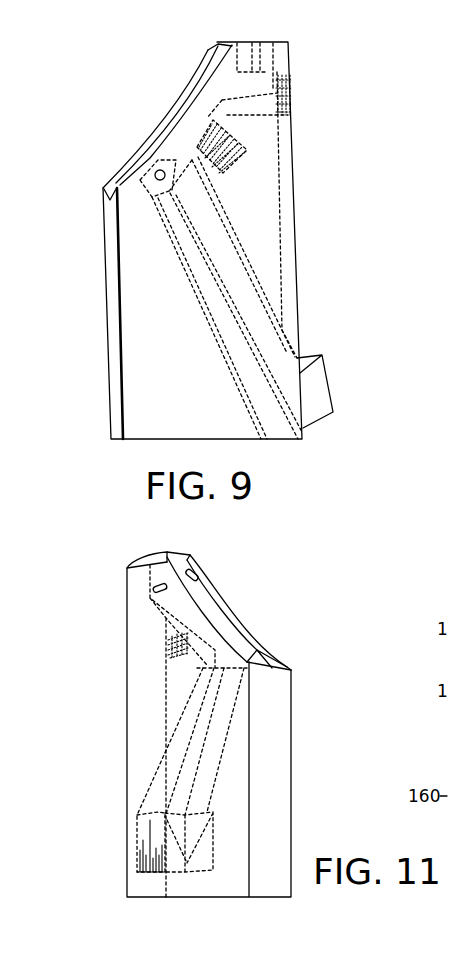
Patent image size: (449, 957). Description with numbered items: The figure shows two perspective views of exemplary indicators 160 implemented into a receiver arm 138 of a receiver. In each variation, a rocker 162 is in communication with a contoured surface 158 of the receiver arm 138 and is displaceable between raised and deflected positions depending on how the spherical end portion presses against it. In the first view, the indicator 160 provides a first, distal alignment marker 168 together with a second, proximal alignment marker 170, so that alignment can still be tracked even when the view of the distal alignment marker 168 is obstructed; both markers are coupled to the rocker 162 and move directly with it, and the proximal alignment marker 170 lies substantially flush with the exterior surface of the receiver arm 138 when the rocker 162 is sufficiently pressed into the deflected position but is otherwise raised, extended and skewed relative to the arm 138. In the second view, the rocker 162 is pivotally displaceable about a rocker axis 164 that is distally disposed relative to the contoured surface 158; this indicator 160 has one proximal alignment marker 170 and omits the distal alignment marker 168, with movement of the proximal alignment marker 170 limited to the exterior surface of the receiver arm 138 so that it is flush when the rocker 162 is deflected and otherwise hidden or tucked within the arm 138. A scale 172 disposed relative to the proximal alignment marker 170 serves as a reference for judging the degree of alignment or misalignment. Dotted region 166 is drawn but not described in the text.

In FIG. 9, the receiver arm 138 is at (143, 362).
In FIG. 11, the receiver arm 138 is at (277, 782).
In FIG. 9, the contoured surface 158 is at (118, 181).
In FIG. 11, the contoured surface 158 is at (270, 668).
In FIG. 9, the indicator 160 is at (298, 100).
In FIG. 11, the indicator 160 is at (135, 843).
In FIG. 9, the rocker 162 is at (203, 70).
In FIG. 11, the rocker 162 is at (220, 628).
In FIG. 9, the rocker axis 164 is at (155, 180).
In FIG. 11, the rocker axis 164 is at (152, 590).
In FIG. 9, the hatched connection region 166 is at (237, 148).
In FIG. 11, the hatched connection region 166 is at (167, 652).
In FIG. 9, the distal alignment marker 168 is at (252, 78).
In FIG. 9, the proximal alignment marker 170 is at (320, 383).
In FIG. 11, the proximal alignment marker 170 is at (183, 855).
In FIG. 11, the scale 172 is at (153, 872).